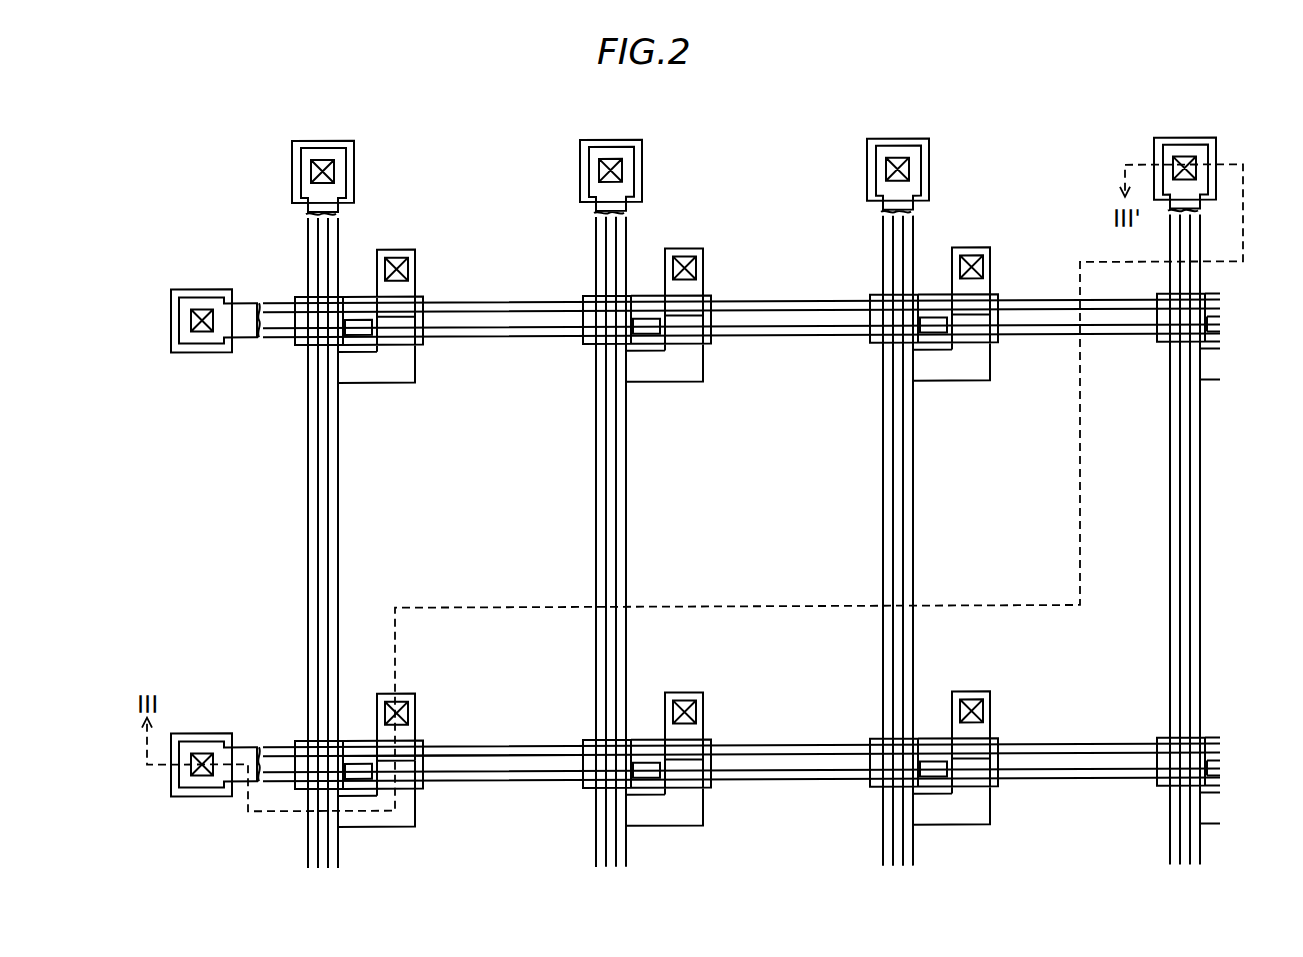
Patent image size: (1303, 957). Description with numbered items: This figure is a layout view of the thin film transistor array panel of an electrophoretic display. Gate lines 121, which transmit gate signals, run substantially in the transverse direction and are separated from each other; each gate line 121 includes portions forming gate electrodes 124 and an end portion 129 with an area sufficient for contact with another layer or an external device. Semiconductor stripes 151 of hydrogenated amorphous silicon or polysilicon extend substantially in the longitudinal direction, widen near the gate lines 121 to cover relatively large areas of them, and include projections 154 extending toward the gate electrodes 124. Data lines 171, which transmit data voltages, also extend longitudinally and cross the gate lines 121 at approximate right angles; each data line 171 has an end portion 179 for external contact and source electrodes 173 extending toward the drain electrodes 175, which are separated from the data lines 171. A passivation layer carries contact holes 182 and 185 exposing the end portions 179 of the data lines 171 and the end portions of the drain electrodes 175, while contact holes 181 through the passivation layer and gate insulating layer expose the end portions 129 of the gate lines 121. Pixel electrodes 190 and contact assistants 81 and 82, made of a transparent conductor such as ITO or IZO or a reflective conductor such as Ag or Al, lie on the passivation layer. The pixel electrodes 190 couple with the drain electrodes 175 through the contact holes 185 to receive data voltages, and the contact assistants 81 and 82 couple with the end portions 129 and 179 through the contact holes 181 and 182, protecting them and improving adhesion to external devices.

The gate line 121 is at (533, 781).
The gate electrode 124 is at (415, 765).
The end portion of gate line 129 is at (188, 797).
The semiconductor stripe 151 is at (319, 560).
The projection 154 is at (368, 780).
The data line 171 is at (308, 525).
The source electrode 173 is at (407, 828).
The drain electrode 175 is at (415, 703).
The end portion of data line 179 is at (1205, 145).
The contact hole 181 is at (203, 752).
The contact hole 182 is at (1182, 155).
The contact hole 185 is at (393, 692).
The pixel electrode 190 is at (507, 755).
The contact assistant 81 is at (212, 797).
The contact assistant 82 is at (1215, 152).